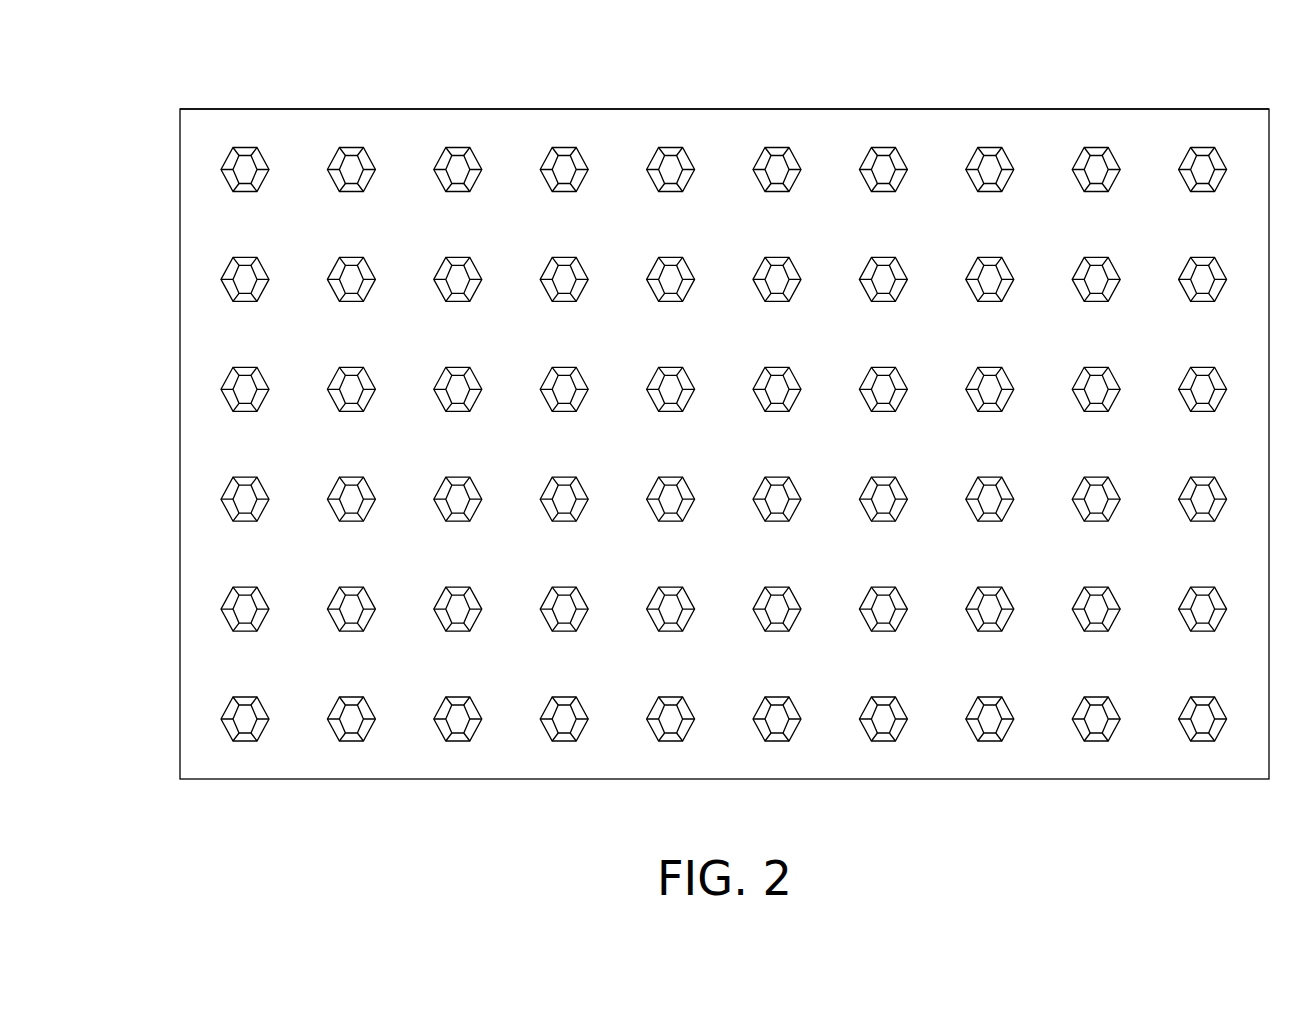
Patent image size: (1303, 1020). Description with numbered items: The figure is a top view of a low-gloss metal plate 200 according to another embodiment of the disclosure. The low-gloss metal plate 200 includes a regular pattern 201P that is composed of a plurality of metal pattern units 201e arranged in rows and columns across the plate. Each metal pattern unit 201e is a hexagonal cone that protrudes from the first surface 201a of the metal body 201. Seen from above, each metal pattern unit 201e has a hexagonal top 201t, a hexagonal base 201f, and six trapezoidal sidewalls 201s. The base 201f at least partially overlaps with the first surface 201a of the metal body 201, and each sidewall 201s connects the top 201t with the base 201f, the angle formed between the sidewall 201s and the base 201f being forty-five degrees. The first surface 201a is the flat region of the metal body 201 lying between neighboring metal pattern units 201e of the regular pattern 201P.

The low-gloss metal plate 200 is at (111, 63).
The metal body 201 is at (180, 182).
The regular pattern 201P is at (884, 105).
The metal pattern unit 201e is at (450, 56).
The top 201t is at (245, 162).
The sidewall 201s is at (268, 154).
The base 201f is at (276, 180).
The first surface 201a is at (941, 754).